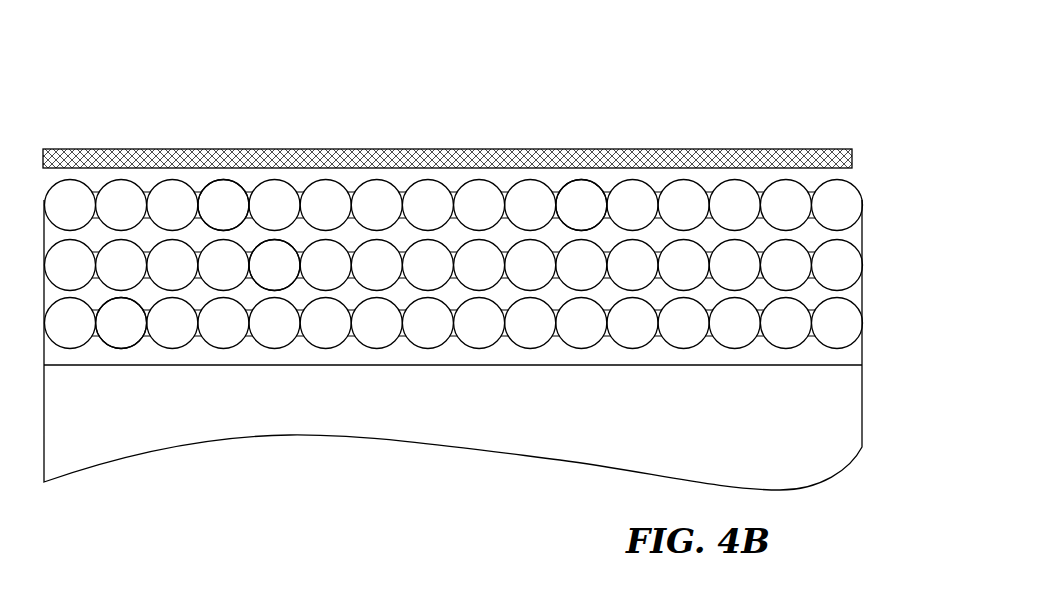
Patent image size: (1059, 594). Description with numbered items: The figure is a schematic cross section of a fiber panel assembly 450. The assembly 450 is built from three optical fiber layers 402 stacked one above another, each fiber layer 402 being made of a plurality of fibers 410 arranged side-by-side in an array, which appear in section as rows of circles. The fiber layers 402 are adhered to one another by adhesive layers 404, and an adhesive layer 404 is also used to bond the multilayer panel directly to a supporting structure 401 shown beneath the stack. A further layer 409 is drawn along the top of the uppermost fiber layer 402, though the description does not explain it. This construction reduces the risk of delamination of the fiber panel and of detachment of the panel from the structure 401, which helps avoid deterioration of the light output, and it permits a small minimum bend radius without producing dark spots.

The fiber panel assembly 450 is at (146, 74).
The supporting structure 401 is at (647, 435).
The optical fiber layer 402 is at (862, 192).
The adhesive layer 404 is at (855, 233).
The cover layer 409 is at (470, 151).
The fibers 410 is at (222, 186).